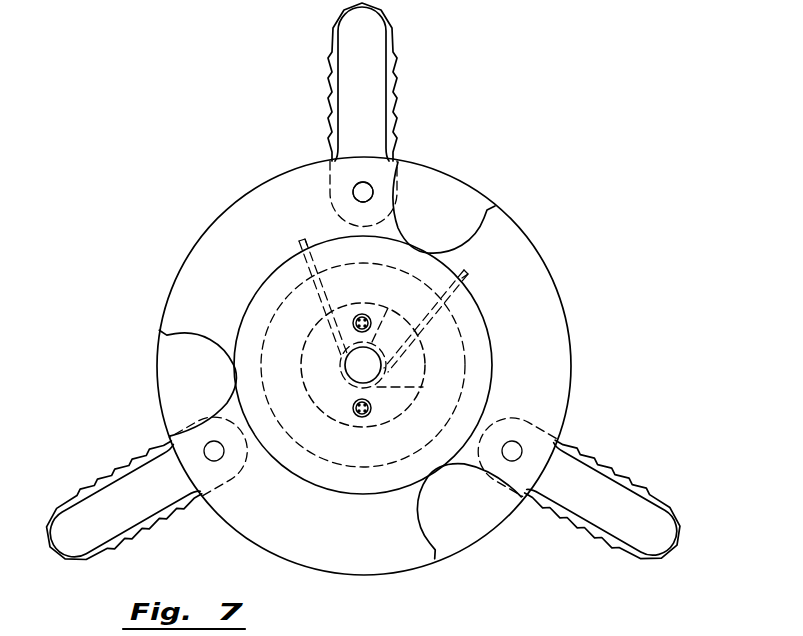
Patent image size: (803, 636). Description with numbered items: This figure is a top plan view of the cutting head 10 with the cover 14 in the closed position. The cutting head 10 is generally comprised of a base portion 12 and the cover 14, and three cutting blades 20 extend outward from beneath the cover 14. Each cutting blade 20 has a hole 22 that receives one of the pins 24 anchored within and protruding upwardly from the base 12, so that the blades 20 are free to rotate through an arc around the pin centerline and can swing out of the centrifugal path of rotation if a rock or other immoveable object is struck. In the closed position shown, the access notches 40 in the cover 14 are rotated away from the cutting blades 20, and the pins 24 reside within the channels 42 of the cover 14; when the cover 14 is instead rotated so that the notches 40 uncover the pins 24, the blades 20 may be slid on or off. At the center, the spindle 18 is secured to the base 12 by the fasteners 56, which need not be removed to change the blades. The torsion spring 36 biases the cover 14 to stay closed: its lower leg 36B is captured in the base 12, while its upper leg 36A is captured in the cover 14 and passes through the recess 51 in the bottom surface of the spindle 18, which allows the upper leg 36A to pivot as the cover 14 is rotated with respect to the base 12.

The cutting head 10 is at (590, 279).
The base portion 12 is at (452, 537).
The cover 14 is at (562, 403).
The spindle 18 is at (303, 325).
The cutting blades 20 is at (368, 38).
The holes 22 is at (356, 187).
The pins 24 is at (363, 192).
The torsion spring 36 is at (385, 390).
The upper leg 36A is at (432, 310).
The lower leg 36B is at (296, 244).
The access notches 40 is at (423, 250).
The channels 42 is at (376, 184).
The recess 51 is at (383, 386).
The fasteners 56 is at (370, 417).